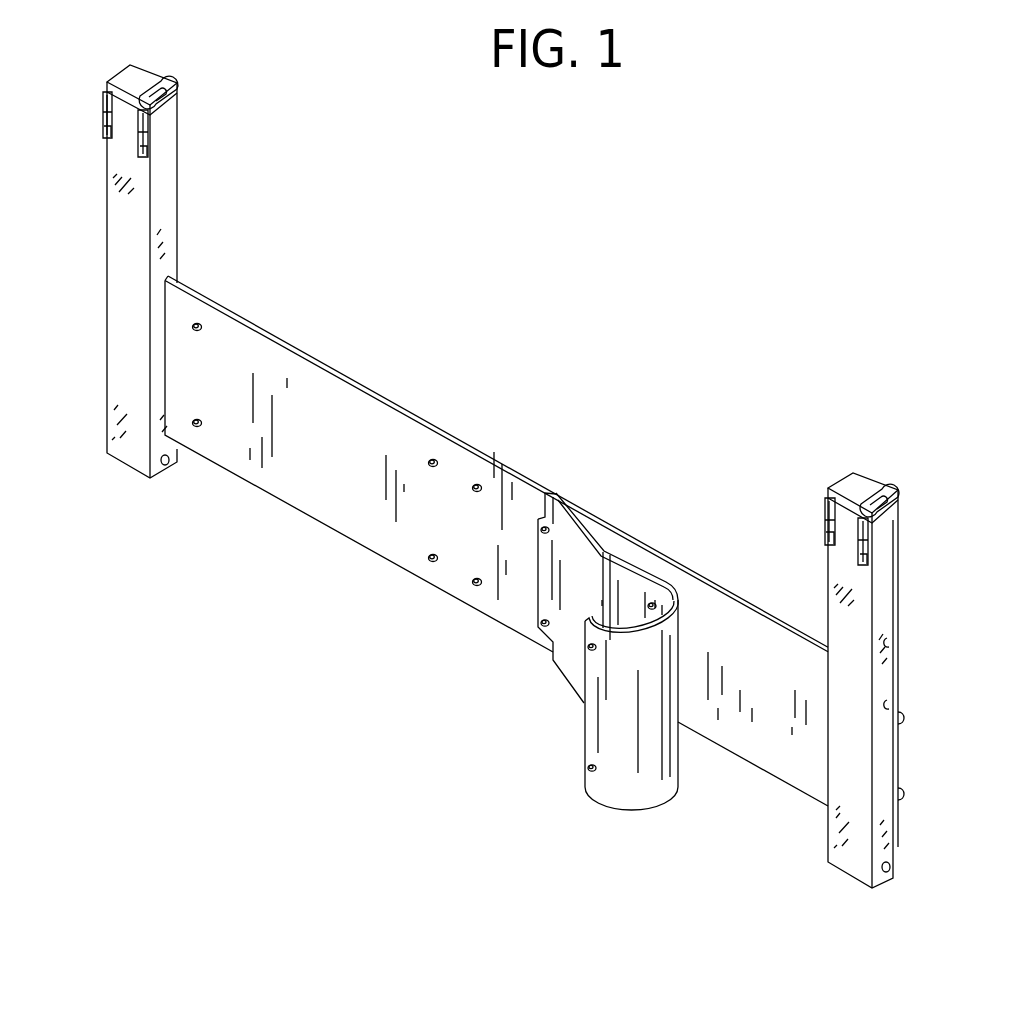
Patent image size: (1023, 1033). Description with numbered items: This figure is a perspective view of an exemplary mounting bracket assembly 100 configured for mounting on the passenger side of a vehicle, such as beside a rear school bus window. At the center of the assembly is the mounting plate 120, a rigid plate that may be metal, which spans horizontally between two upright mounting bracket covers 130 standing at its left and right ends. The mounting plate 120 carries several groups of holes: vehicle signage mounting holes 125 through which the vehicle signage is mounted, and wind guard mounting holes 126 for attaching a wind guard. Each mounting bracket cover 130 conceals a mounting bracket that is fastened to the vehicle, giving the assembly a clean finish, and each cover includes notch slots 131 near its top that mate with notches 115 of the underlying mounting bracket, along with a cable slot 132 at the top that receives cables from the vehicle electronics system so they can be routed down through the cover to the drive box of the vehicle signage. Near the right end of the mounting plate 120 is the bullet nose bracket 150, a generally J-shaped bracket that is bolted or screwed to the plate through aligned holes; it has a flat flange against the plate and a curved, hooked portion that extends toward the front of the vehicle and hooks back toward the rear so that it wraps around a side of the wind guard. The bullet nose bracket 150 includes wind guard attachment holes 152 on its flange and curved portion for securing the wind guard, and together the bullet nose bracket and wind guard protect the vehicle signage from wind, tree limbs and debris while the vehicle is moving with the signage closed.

The mounting bracket assembly 100 is at (682, 262).
The mounting plate 120 is at (327, 356).
The vehicle signage mounting holes 125 is at (202, 422).
The wind guard mounting holes 126 is at (481, 485).
The mounting bracket cover 130 is at (106, 200).
The notch slots 131 is at (107, 129).
The cable slot 132 is at (157, 86).
The notches 115 is at (103, 103).
The bullet nose bracket 150 is at (663, 791).
The wind guard attachment holes 152 is at (652, 603).